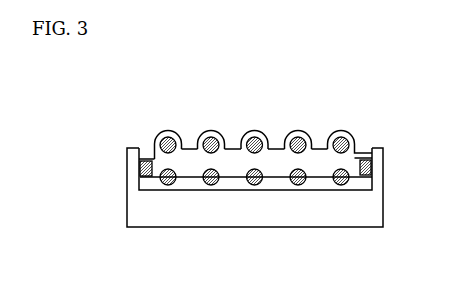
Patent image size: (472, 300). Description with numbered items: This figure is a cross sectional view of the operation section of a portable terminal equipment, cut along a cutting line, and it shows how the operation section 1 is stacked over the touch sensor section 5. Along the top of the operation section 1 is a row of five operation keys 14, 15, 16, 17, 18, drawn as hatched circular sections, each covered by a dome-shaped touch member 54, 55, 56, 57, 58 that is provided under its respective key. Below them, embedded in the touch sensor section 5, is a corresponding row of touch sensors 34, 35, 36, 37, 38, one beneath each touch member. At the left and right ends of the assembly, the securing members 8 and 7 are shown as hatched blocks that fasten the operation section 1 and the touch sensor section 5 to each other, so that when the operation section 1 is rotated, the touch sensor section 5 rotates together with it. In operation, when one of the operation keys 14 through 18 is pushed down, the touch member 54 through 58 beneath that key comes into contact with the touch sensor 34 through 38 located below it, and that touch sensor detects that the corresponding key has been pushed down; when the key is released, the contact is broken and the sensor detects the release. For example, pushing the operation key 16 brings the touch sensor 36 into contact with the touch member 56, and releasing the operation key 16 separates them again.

The operation section 1 is at (386, 152).
The touch sensor section 5 is at (372, 183).
The securing member 7 is at (372, 164).
The securing member 8 is at (140, 165).
The operation key 14 is at (163, 134).
The operation key 15 is at (206, 134).
The operation key 16 is at (250, 134).
The operation key 17 is at (293, 134).
The operation key 18 is at (336, 134).
The touch sensor 34 is at (170, 185).
The touch sensor 35 is at (213, 185).
The touch sensor 36 is at (256, 185).
The touch sensor 37 is at (300, 185).
The touch sensor 38 is at (343, 185).
The touch member 54 is at (157, 134).
The touch member 55 is at (200, 134).
The touch member 56 is at (244, 134).
The touch member 57 is at (287, 134).
The touch member 58 is at (330, 134).